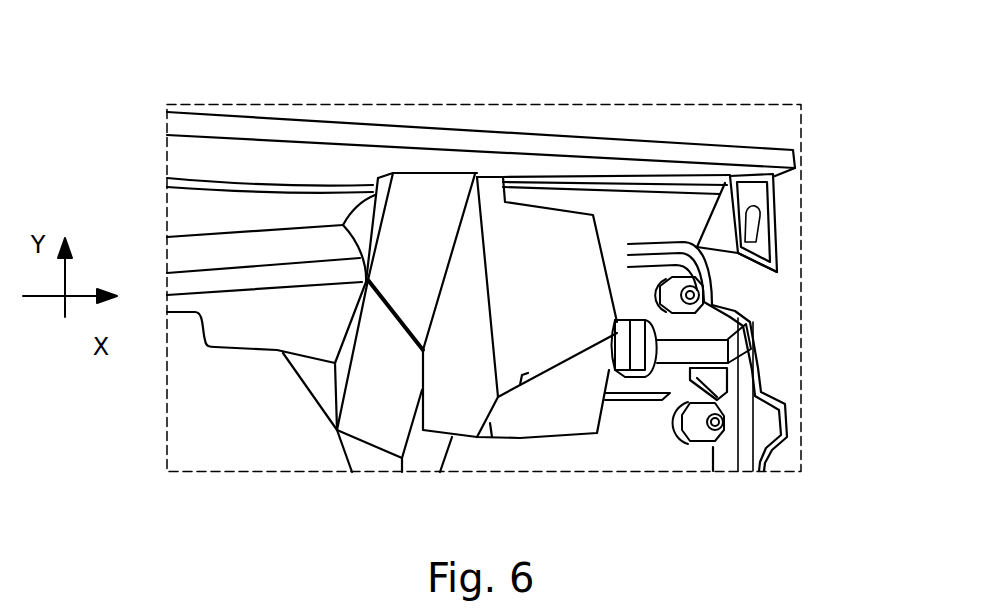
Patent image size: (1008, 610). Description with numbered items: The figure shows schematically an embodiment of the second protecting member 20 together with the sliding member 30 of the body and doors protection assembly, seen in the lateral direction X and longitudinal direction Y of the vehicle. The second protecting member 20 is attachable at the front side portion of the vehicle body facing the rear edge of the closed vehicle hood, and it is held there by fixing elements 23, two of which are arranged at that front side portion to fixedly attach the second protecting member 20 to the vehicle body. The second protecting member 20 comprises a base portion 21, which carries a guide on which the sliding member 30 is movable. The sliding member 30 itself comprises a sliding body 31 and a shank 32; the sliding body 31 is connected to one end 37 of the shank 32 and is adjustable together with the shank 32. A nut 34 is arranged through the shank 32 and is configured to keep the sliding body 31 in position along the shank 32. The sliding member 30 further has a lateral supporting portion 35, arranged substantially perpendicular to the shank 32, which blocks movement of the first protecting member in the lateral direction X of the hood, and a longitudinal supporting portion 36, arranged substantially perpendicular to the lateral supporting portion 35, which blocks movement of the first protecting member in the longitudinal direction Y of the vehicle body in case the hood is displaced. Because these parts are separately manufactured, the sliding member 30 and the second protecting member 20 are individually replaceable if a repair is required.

The second protecting member 20 is at (621, 214).
The base portion 21 is at (680, 222).
The fixing elements 23 is at (698, 292).
The sliding member 30 is at (477, 286).
The sliding body 31 is at (538, 242).
The shank 32 is at (712, 357).
The nut 34 is at (640, 357).
The lateral supporting portion 35 is at (463, 398).
The longitudinal supporting portion 36 is at (413, 235).
The end of the shank 37 is at (670, 353).